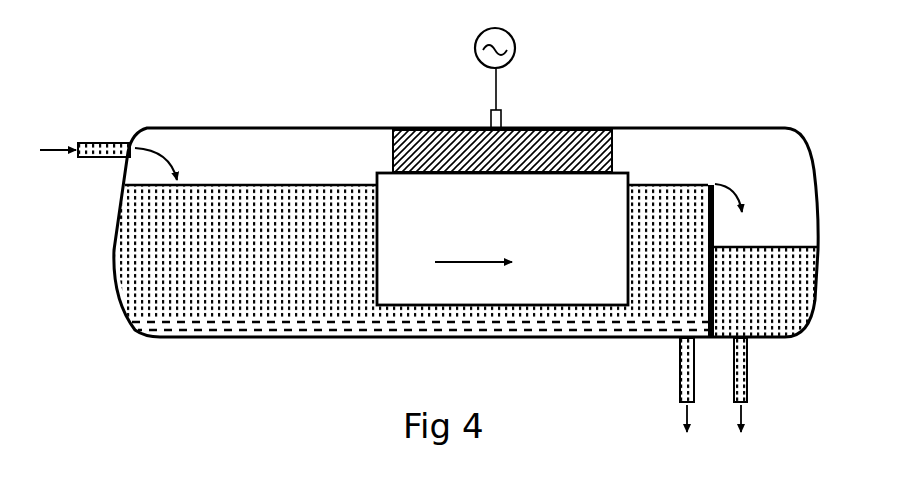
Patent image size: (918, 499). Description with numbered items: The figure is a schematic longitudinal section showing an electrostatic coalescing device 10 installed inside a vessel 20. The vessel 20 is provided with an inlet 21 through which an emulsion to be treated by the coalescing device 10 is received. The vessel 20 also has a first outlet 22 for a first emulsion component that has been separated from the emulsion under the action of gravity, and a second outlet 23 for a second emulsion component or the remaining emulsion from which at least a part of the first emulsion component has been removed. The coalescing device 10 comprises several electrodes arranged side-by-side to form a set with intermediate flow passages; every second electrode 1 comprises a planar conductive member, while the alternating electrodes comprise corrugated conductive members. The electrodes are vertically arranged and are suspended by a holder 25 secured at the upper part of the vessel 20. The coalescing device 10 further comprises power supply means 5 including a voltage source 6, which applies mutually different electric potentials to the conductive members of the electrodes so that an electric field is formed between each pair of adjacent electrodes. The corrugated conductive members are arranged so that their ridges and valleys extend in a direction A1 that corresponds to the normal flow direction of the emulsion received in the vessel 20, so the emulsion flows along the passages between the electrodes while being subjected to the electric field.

The electrode 1 is at (613, 184).
The power supply means 5 is at (518, 94).
The voltage source 6 is at (512, 36).
The electrostatic coalescing device 10 is at (373, 160).
The vessel 20 is at (745, 128).
The inlet 21 is at (104, 142).
The first outlet 22 is at (680, 372).
The second outlet 23 is at (748, 368).
The holder 25 is at (432, 129).
The direction A1 is at (461, 255).